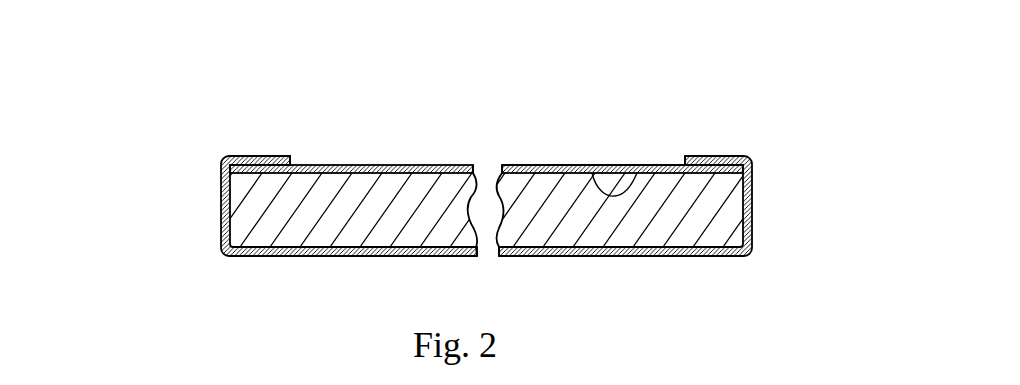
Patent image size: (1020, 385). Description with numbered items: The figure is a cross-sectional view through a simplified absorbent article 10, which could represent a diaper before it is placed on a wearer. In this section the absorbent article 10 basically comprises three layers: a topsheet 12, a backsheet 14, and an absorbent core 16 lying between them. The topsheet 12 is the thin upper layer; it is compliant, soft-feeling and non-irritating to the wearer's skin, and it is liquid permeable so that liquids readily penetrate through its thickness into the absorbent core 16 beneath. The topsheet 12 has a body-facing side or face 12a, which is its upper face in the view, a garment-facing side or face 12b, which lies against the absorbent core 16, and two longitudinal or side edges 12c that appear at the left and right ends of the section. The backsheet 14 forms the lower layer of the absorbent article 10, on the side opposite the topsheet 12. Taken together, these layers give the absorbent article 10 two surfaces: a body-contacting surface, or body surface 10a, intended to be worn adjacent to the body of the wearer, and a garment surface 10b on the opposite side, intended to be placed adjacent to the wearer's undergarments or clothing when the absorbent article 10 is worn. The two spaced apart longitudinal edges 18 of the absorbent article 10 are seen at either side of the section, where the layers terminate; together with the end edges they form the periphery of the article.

The absorbent article 10 is at (223, 137).
The body surface 10a is at (512, 167).
The garment surface 10b is at (565, 257).
The topsheet 12 is at (322, 167).
The body-facing face 12a is at (578, 165).
The garment-facing face 12b is at (637, 167).
The side edges 12c is at (224, 163).
The backsheet 14 is at (328, 252).
The absorbent core 16 is at (250, 217).
The longitudinal edges 18 is at (229, 220).